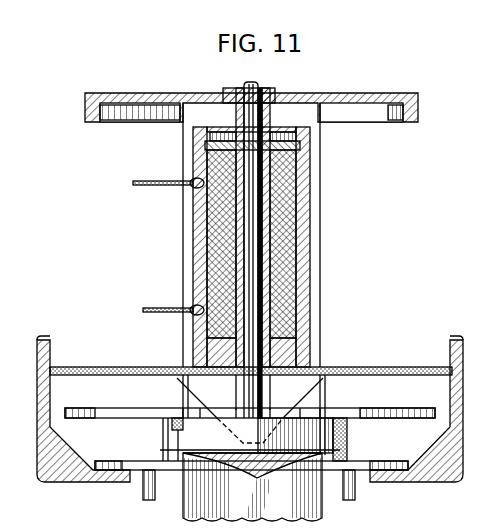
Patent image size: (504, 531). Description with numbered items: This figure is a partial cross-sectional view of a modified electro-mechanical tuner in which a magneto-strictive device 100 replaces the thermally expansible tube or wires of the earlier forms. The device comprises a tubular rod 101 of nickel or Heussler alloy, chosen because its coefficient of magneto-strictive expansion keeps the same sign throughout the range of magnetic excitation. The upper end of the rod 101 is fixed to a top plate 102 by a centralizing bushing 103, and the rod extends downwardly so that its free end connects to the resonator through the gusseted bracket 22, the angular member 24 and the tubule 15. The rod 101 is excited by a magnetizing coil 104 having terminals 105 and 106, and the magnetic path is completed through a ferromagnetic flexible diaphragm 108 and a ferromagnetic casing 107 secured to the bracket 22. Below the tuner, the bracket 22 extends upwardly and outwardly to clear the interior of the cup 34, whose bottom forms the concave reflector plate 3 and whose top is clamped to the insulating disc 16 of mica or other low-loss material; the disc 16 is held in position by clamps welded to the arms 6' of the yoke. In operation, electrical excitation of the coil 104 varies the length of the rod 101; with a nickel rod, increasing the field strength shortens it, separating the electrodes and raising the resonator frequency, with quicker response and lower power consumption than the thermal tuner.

The tubular rod 101 is at (254, 83).
The top plate 102 is at (366, 95).
The centralizing bushing 103 is at (231, 92).
The magnetizing coil 104 is at (288, 222).
The terminal 105 is at (162, 189).
The terminal 106 is at (174, 307).
The ferromagnetic casing 107 is at (208, 242).
The ferromagnetic flexible diaphragm 108 is at (288, 146).
The magneto-strictive device 100 is at (317, 247).
The concave reflector plate 3 is at (303, 307).
The arms 6' is at (263, 356).
The gusseted bracket 22 is at (388, 369).
The angular member 24 is at (461, 400).
The insulating disc 16 is at (152, 409).
The cup 34 is at (178, 445).
The tubule 15 is at (395, 463).